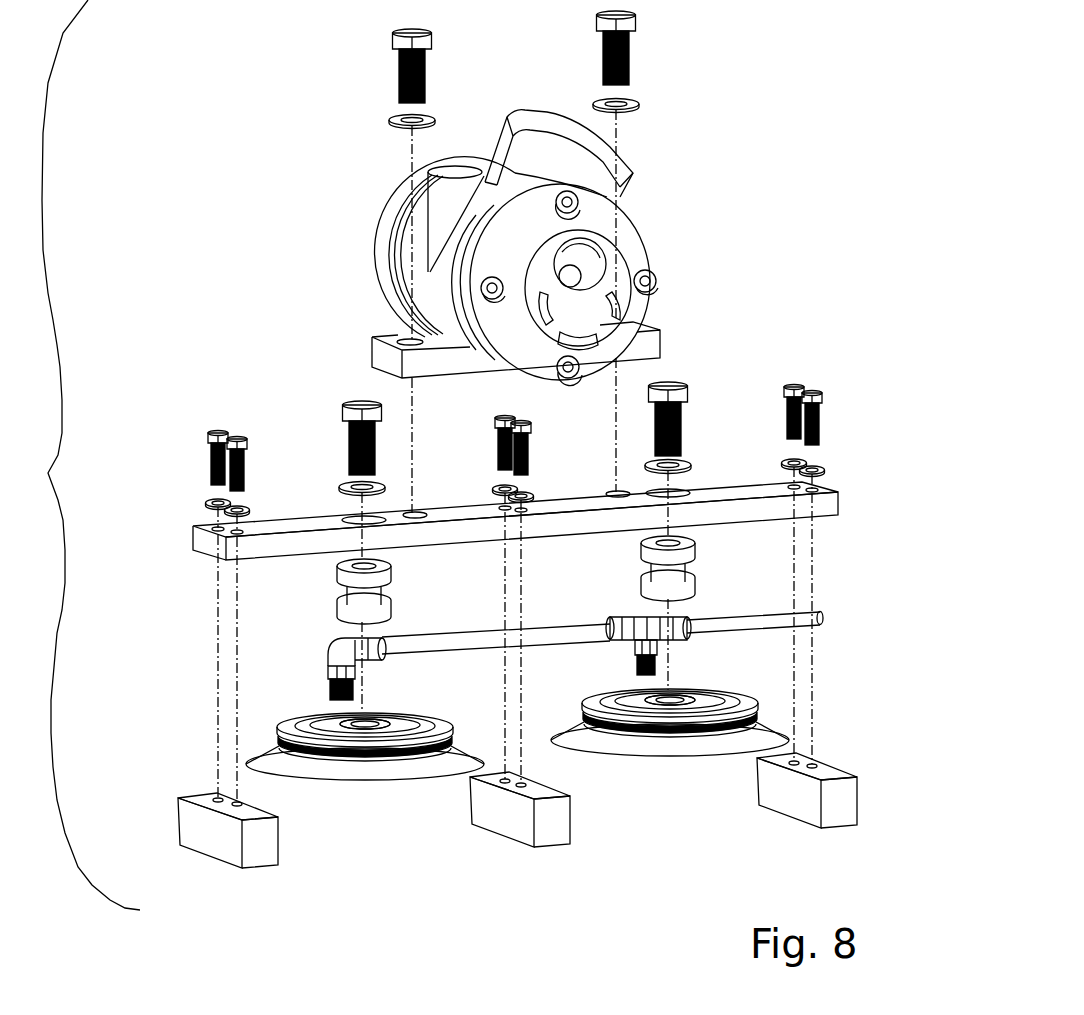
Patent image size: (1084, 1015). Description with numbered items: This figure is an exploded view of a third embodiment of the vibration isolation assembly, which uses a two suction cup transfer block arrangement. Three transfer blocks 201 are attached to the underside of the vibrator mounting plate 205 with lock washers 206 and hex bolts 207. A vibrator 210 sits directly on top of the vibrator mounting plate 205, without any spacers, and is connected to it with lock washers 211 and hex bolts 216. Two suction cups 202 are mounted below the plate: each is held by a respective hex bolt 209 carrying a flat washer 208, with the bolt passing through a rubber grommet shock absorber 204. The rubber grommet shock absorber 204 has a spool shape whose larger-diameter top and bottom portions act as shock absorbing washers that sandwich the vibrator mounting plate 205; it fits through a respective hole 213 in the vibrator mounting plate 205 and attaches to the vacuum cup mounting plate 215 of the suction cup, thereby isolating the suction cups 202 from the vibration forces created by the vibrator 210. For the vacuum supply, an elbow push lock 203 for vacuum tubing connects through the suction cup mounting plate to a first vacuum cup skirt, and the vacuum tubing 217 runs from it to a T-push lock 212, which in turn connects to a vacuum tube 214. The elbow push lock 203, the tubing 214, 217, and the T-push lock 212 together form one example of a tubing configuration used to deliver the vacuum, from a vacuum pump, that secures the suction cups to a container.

The transfer block 201 is at (282, 848).
The suction cup 202 is at (370, 785).
The elbow push lock 203 is at (320, 678).
The rubber grommet shock absorber 204 is at (333, 617).
The vibrator mounting plate 205 is at (197, 553).
The lock washer 206 is at (203, 502).
The hex bolt 207 is at (205, 434).
The flat washer 208 is at (340, 482).
The hex bolt 209 is at (345, 404).
The vibrator 210 is at (372, 337).
The lock washer 211 is at (390, 119).
The T-push lock 212 is at (692, 612).
The hole 213 is at (346, 512).
The vacuum tube 214 is at (828, 621).
The vacuum cup mounting plate 215 is at (397, 725).
The hex bolt 216 is at (393, 45).
The vacuum tubing 217 is at (537, 636).